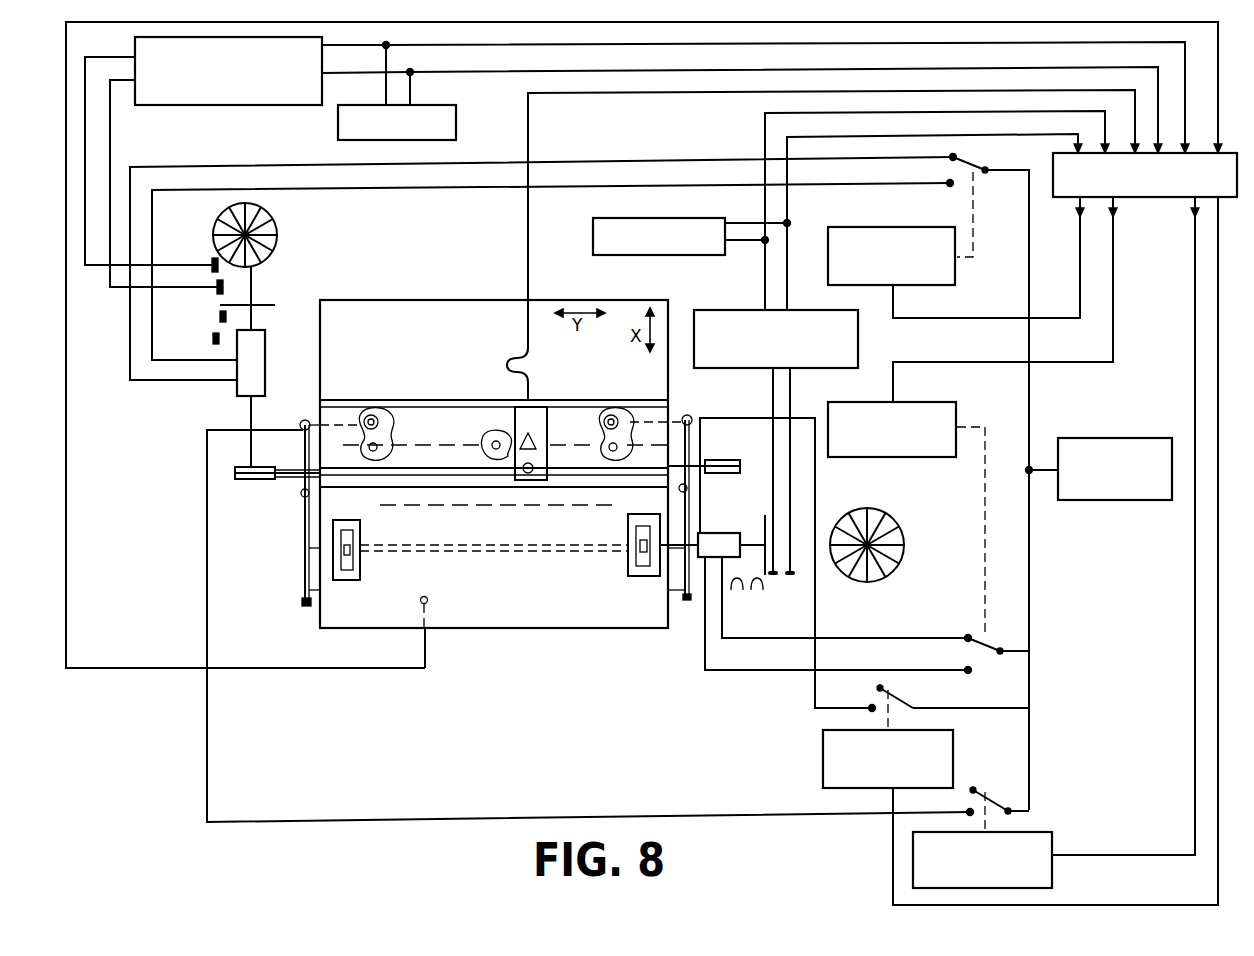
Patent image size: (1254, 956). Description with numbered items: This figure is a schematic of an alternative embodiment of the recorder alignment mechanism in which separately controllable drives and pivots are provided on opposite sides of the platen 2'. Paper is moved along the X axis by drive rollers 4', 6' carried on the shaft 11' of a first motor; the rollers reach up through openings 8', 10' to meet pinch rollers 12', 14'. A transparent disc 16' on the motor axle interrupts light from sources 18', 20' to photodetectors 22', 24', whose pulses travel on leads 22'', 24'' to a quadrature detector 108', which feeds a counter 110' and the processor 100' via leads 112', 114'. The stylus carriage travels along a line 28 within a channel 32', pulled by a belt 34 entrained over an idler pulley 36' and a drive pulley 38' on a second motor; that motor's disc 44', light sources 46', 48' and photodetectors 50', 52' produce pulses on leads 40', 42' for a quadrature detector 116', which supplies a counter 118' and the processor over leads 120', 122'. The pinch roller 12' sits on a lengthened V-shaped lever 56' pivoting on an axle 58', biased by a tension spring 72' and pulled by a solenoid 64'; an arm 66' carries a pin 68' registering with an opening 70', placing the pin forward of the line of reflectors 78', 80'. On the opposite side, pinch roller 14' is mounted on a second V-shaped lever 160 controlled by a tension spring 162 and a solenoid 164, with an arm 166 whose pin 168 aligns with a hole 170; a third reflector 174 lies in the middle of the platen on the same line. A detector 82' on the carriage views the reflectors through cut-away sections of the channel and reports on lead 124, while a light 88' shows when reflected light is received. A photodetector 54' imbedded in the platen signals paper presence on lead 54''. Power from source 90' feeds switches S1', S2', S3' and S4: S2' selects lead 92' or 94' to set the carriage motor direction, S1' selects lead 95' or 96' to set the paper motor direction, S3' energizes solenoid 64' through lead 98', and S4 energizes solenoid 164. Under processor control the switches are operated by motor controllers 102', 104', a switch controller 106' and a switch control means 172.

The platen 2' is at (494, 450).
The drive roller 4' is at (350, 567).
The drive roller 6' is at (631, 565).
The opening 8' is at (366, 537).
The opening 10' is at (515, 535).
The shaft of motor M1 11' is at (494, 558).
The pinch roller 12' is at (372, 567).
The pinch roller 14' is at (615, 563).
The transparent disc 16' is at (782, 530).
The light source 18' is at (738, 597).
The light source 20' is at (760, 602).
The photodetector 22' is at (807, 491).
The lead 22'' is at (814, 385).
The photodetector 24' is at (780, 491).
The lead 24'' is at (750, 436).
The line 28 is at (528, 482).
The channel 32' is at (494, 429).
The belt 34 is at (292, 465).
The idler pulley 36' is at (716, 480).
The drive pulley 38' is at (240, 418).
The lead 40' is at (154, 207).
The lead 42' is at (141, 185).
The disc 44' is at (259, 298).
The light source 46' is at (193, 315).
The light source 48' is at (189, 343).
The photodetector 50' is at (190, 281).
The photodetector 52' is at (217, 237).
The photodetector 54' is at (449, 623).
The lead 54'' is at (644, 358).
The lever 56' is at (282, 535).
The axle 58' is at (294, 619).
The solenoid 64' is at (300, 493).
The arm 66' is at (339, 399).
The pin 68' is at (375, 419).
The opening 70' is at (392, 398).
The tension spring 72' is at (283, 504).
The reflector 78' is at (401, 457).
The reflector 80' is at (634, 456).
The photodetector 82' is at (552, 433).
The light 88' is at (557, 460).
The power source 90' is at (1099, 457).
The lead 92' is at (541, 256).
The lead 94' is at (553, 270).
The lead 95' is at (847, 599).
The lead 96' is at (838, 627).
The lead 98' is at (590, 636).
The processor 100' is at (1145, 197).
The motor controller 102' is at (956, 257).
The motor controller 104' is at (972, 417).
The switch controller 106' is at (1056, 542).
The quadrature detector 108' is at (809, 339).
The counter 110' is at (659, 247).
The lead 112' is at (907, 207).
The lead 114' is at (903, 222).
The quadrature detector 116' is at (228, 85).
The counter 118' is at (424, 97).
The lead 120' is at (755, 98).
The lead 122' is at (742, 110).
The lead 124 is at (525, 250).
The V-shaped lever 160 is at (688, 605).
The tension spring 162 is at (688, 492).
The solenoid 164 is at (692, 419).
The arm 166 is at (686, 416).
The pin 168 is at (616, 420).
The hole 170 is at (606, 420).
The switch control means 172 is at (823, 748).
The third reflector 174 is at (486, 445).
The switch S1' is at (998, 662).
The switch S2' is at (990, 474).
The switch S3' is at (999, 799).
The switch S4 is at (908, 705).